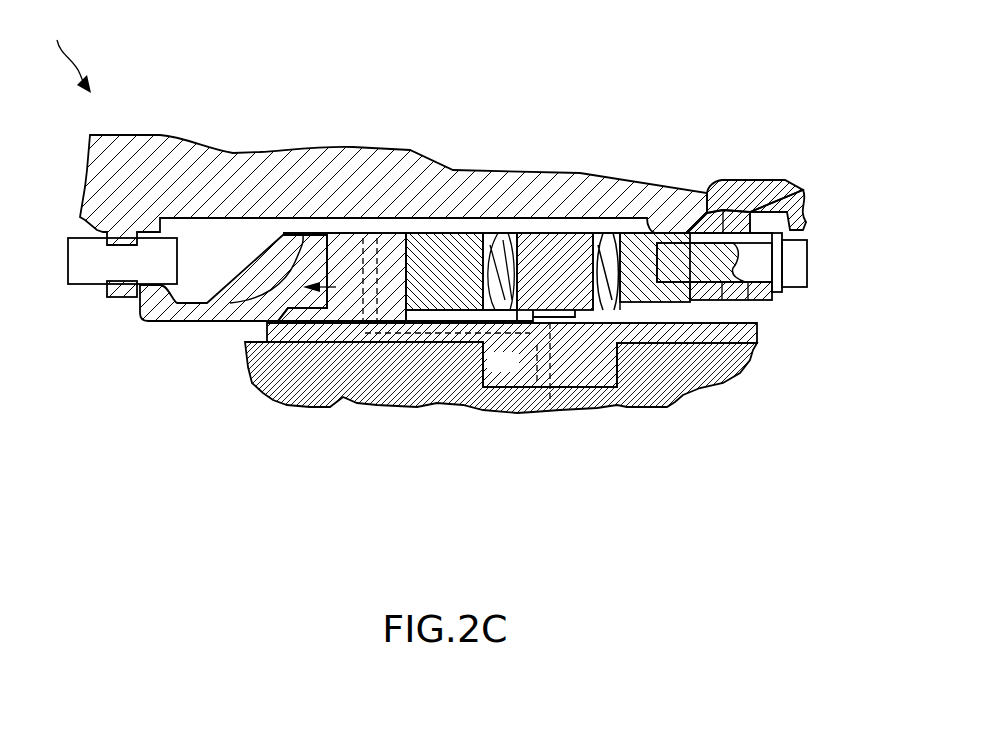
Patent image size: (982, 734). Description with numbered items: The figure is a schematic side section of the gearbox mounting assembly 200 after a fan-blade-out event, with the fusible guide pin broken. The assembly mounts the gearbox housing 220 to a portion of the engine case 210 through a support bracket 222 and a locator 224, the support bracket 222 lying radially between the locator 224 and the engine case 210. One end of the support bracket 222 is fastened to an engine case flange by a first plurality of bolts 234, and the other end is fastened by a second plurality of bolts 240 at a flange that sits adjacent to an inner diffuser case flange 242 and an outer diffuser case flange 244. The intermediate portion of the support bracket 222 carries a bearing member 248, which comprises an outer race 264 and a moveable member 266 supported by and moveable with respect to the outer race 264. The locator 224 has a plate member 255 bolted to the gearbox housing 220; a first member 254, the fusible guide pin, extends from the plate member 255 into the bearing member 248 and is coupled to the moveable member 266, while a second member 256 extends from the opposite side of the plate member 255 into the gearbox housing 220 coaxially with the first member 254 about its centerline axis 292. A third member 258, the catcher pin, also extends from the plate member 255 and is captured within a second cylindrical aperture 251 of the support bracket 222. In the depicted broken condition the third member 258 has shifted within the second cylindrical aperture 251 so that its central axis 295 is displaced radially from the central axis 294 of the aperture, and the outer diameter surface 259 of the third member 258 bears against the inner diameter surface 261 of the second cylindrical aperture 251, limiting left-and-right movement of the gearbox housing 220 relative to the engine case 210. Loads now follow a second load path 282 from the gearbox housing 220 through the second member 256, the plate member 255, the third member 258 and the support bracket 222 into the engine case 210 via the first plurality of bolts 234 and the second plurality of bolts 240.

The gearbox mounting assembly 200 is at (63, 55).
The engine case 210 is at (412, 153).
The gearbox housing 220 is at (703, 380).
The support bracket 222 is at (223, 324).
The locator 224 is at (597, 378).
The first plurality of bolts 234 is at (87, 286).
The second plurality of bolts 240 is at (798, 290).
The inner diffuser case flange 242 is at (740, 193).
The outer diffuser case flange 244 is at (785, 215).
The bearing member 248 is at (505, 240).
The second cylindrical aperture 251 is at (403, 242).
The first member 254 is at (583, 240).
The plate member 255 is at (297, 342).
The second member 256 is at (507, 380).
The third member 258 is at (347, 242).
The outer diameter surface 259 is at (327, 270).
The inner diameter surface 261 is at (332, 248).
The outer race 264 is at (487, 303).
The moveable member 266 is at (507, 303).
The second load path 282 is at (530, 350).
The centerline axis 292 is at (553, 390).
The central axis 294 is at (389, 242).
The central axis 295 is at (367, 242).